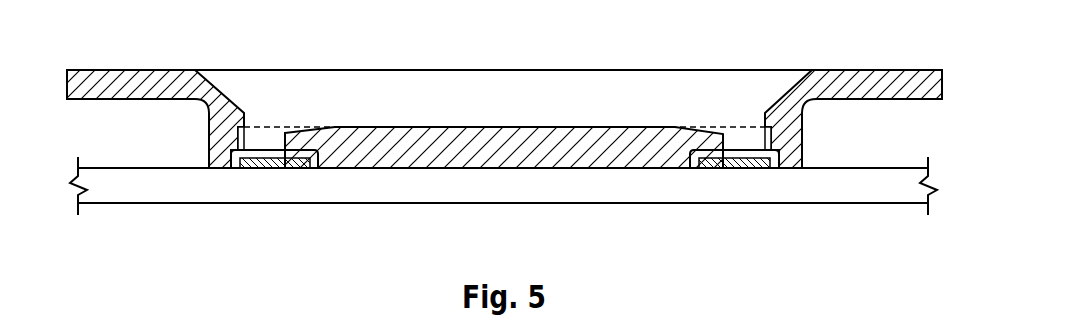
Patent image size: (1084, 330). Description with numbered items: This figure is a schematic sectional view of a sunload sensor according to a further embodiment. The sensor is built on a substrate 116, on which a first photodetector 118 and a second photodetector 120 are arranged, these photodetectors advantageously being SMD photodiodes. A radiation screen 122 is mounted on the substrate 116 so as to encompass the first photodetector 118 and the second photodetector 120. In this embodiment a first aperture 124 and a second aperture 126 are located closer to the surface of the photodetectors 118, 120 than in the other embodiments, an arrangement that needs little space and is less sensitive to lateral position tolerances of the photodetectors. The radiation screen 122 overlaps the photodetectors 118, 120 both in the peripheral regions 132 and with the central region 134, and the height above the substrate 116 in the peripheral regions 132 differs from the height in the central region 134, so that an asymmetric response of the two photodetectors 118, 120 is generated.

The substrate 116 is at (168, 192).
The first photodetector 118 is at (282, 170).
The second photodetector 120 is at (738, 163).
The radiation screen 122 is at (504, 86).
The first aperture 124 is at (273, 138).
The second aperture 126 is at (737, 110).
The peripheral regions 132 is at (133, 87).
The central region 134 is at (508, 125).